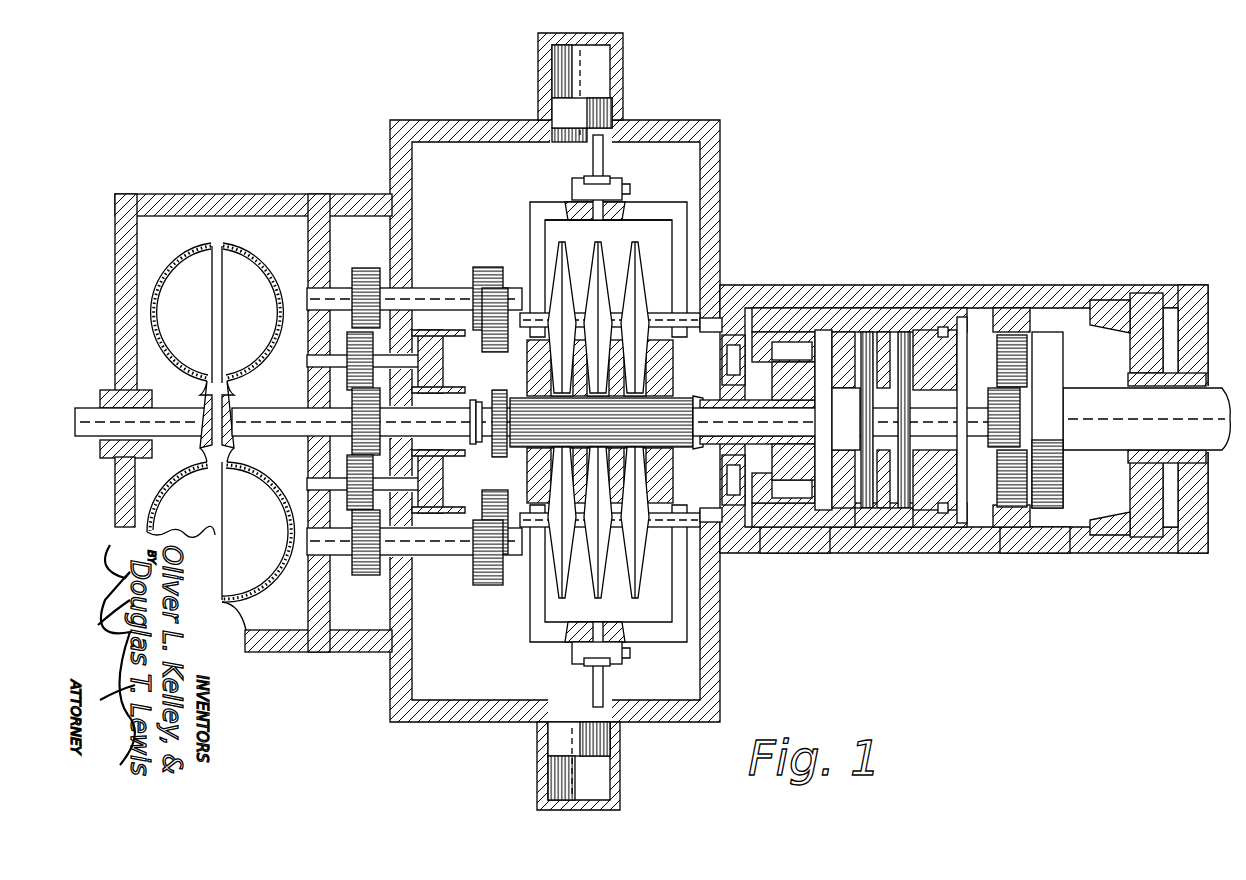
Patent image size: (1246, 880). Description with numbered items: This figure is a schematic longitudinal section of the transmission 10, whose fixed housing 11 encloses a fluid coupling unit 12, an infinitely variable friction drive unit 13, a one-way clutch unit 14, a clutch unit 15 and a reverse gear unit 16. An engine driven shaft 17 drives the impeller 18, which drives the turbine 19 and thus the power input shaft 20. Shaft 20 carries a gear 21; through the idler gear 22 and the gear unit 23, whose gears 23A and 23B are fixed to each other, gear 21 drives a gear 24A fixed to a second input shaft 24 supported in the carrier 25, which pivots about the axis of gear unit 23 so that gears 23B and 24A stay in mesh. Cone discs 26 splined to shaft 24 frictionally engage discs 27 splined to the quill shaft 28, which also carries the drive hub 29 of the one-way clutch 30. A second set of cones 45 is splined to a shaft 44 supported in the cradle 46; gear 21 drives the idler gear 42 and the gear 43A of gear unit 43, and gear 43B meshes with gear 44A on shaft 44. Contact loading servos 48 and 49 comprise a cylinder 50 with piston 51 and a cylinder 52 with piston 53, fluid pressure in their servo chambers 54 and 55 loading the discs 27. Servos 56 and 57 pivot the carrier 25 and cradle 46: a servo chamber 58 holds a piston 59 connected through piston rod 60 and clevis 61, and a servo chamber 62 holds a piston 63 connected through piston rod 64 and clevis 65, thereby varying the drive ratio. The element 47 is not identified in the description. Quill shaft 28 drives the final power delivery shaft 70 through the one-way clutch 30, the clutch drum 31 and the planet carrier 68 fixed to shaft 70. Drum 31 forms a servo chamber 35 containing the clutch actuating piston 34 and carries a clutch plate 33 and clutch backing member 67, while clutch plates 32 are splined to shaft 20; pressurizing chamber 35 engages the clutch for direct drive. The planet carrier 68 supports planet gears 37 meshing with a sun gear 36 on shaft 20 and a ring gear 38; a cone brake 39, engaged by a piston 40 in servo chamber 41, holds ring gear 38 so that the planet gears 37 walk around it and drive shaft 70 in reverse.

The transmission 10 is at (815, 285).
The fixed housing 11 is at (682, 122).
The fluid coupling unit 12 is at (222, 248).
The infinitely variable friction drive unit 13 is at (652, 220).
The one-way clutch unit 14 is at (790, 530).
The clutch unit 15 is at (875, 520).
The reverse gear unit 16 is at (1032, 530).
The engine driven shaft 17 is at (180, 422).
The impeller 18 is at (198, 278).
The turbine 19 is at (248, 275).
The power input shaft 20 is at (258, 418).
The gear 21 is at (356, 440).
The idler gear 22 is at (356, 380).
The gear unit 23 is at (418, 300).
The gear 23A is at (366, 292).
The gear 23B is at (488, 282).
The engine driven power input shaft 24 is at (640, 320).
The gear 24A is at (500, 300).
The carrier 25 is at (535, 224).
The cone discs 26 is at (638, 290).
The discs 27 is at (672, 455).
The quill shaft 28 is at (698, 402).
The drive hub 29 is at (800, 406).
The one-way clutch 30 is at (793, 421).
The clutch drum 31 is at (884, 330).
The clutch plates 32 is at (900, 508).
The clutch plate 33 is at (866, 332).
The clutch actuating piston 34 is at (960, 310).
The servo chamber 35 is at (958, 372).
The sun gear 36 is at (1008, 406).
The planet gears 37 is at (1015, 356).
The ring gear 38 is at (1008, 308).
The cone brake 39 is at (1110, 305).
The piston 40 is at (1145, 340).
The servo chamber 41 is at (1172, 304).
The idler gear 42 is at (392, 493).
The gear unit 43 is at (430, 552).
The gear 43A is at (366, 562).
The gear 43B is at (486, 585).
The shaft 44 is at (582, 578).
The gear 44A is at (500, 552).
The cones 45 is at (630, 578).
The cradle 46 is at (687, 620).
The clutch 47 is at (452, 440).
The contact loading servo 48 is at (446, 372).
The contact loading servo 49 is at (728, 348).
The cylinder 50 is at (432, 388).
The piston 51 is at (448, 392).
The cylinder 52 is at (732, 320).
The piston 53 is at (790, 342).
The servo chamber 54 is at (418, 338).
The servo chamber 55 is at (755, 318).
The servo 56 is at (626, 66).
The servo 57 is at (626, 766).
The servo chamber 58 is at (565, 82).
The piston 59 is at (600, 105).
The piston rod 60 is at (603, 178).
The clevis 61 is at (575, 188).
The servo chamber 62 is at (560, 782).
The piston 63 is at (560, 734).
The piston rod 64 is at (601, 696).
The clevis 65 is at (575, 660).
The clutch backing member 67 is at (835, 460).
The planet carrier 68 is at (1052, 480).
The final power delivery shaft 70 is at (1075, 438).